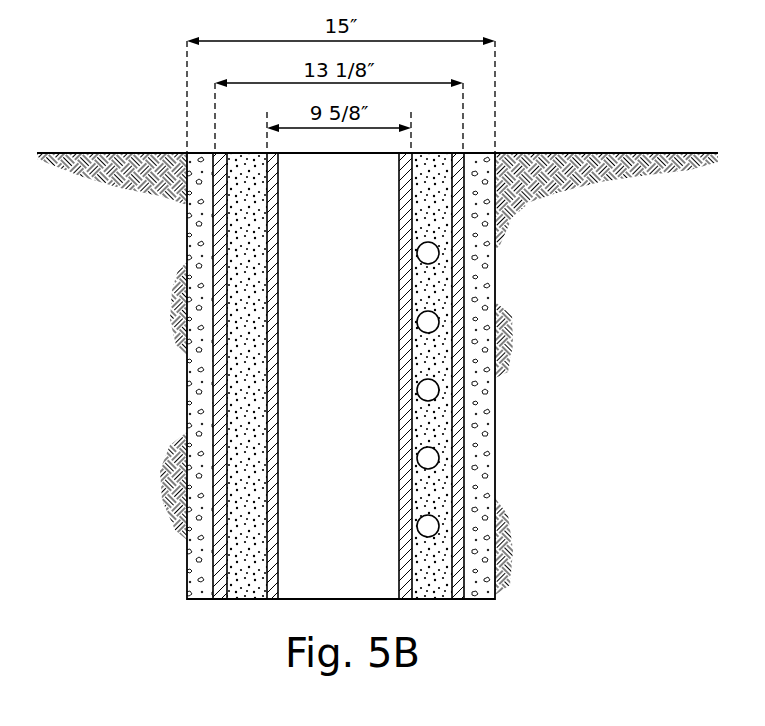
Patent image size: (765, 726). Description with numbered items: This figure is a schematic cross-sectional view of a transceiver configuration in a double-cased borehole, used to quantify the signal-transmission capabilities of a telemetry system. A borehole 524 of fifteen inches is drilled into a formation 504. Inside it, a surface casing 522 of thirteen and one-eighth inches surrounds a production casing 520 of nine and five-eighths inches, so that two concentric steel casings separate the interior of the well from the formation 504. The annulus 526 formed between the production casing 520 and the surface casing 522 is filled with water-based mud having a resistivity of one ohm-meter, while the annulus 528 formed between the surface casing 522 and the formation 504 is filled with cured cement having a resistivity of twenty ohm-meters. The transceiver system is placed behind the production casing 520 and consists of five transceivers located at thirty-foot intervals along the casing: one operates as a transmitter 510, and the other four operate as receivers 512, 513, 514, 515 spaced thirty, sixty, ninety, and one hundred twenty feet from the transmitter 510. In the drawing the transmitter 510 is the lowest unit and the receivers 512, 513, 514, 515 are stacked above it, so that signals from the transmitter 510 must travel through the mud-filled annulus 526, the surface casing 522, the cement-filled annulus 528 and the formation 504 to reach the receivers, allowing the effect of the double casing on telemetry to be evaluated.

The formation 504 is at (62, 300).
The transmitter 510 is at (438, 530).
The receiver 512 is at (438, 462).
The receiver 513 is at (438, 394).
The receiver 514 is at (438, 326).
The receiver 515 is at (438, 257).
The production casing 520 is at (270, 257).
The surface casing 522 is at (218, 336).
The borehole 524 is at (187, 222).
The annulus 526 is at (248, 432).
The annulus 528 is at (203, 565).